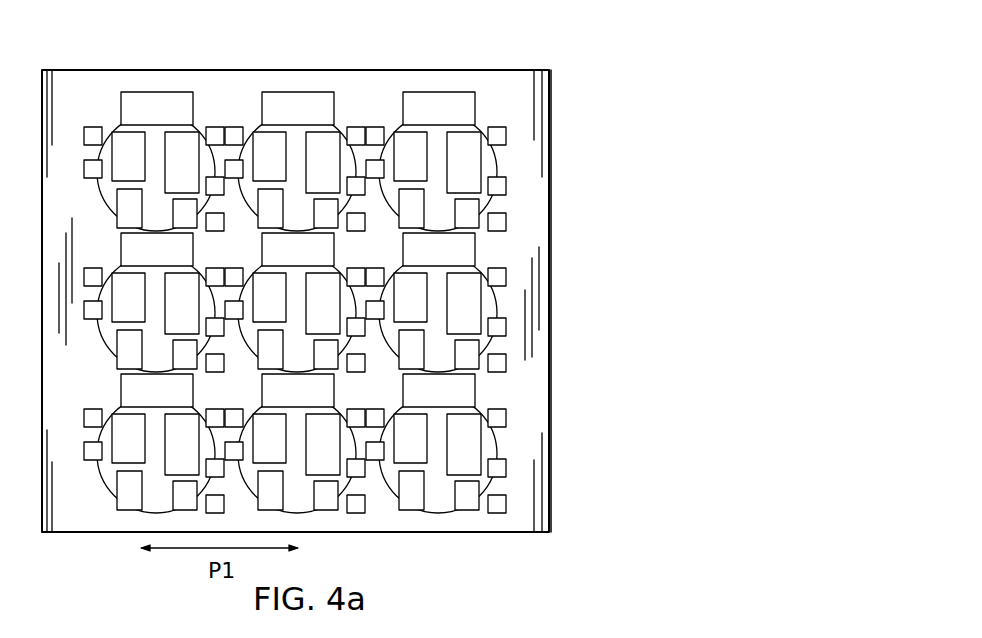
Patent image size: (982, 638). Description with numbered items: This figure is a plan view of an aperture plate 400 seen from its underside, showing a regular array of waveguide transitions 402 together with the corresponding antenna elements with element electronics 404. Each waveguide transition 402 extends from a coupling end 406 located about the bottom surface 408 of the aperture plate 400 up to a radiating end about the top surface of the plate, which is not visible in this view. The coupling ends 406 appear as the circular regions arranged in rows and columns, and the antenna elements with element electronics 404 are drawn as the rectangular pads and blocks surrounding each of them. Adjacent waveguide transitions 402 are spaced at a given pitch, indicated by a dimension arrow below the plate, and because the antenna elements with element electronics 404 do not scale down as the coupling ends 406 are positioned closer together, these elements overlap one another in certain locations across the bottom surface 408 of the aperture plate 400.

The aperture plate 400 is at (587, 77).
The waveguide transition 402 is at (153, 196).
The antenna element with element electronics 404 is at (217, 138).
The coupling end 406 is at (487, 443).
The bottom surface 408 is at (525, 498).